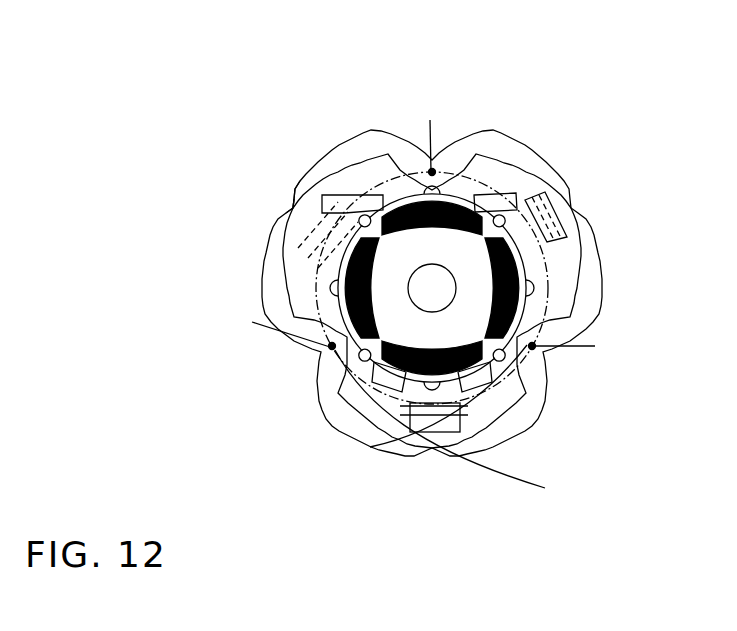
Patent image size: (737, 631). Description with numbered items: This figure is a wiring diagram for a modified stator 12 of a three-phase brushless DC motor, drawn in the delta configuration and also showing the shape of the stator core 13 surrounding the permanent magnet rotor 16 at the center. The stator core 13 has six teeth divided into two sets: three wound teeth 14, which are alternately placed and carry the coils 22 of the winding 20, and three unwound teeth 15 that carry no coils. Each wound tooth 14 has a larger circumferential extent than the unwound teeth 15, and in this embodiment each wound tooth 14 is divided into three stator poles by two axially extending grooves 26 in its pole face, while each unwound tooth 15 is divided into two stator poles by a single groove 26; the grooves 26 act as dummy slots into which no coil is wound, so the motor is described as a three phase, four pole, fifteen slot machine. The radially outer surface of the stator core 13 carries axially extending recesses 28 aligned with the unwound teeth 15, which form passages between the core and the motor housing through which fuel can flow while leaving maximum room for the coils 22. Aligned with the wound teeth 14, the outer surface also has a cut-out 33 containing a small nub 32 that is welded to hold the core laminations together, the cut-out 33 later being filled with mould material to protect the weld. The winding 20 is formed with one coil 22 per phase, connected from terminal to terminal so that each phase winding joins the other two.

The stator 12 is at (315, 425).
The stator core 13 is at (268, 283).
The wound teeth 14 is at (358, 212).
The unwound teeth 15 is at (421, 165).
The rotor 16 is at (393, 330).
The winding 20 is at (588, 401).
The coils 22 is at (548, 193).
The grooves 26 is at (510, 205).
The recesses 28 is at (449, 135).
The nub 32 is at (284, 203).
The cut-out 33 is at (286, 213).